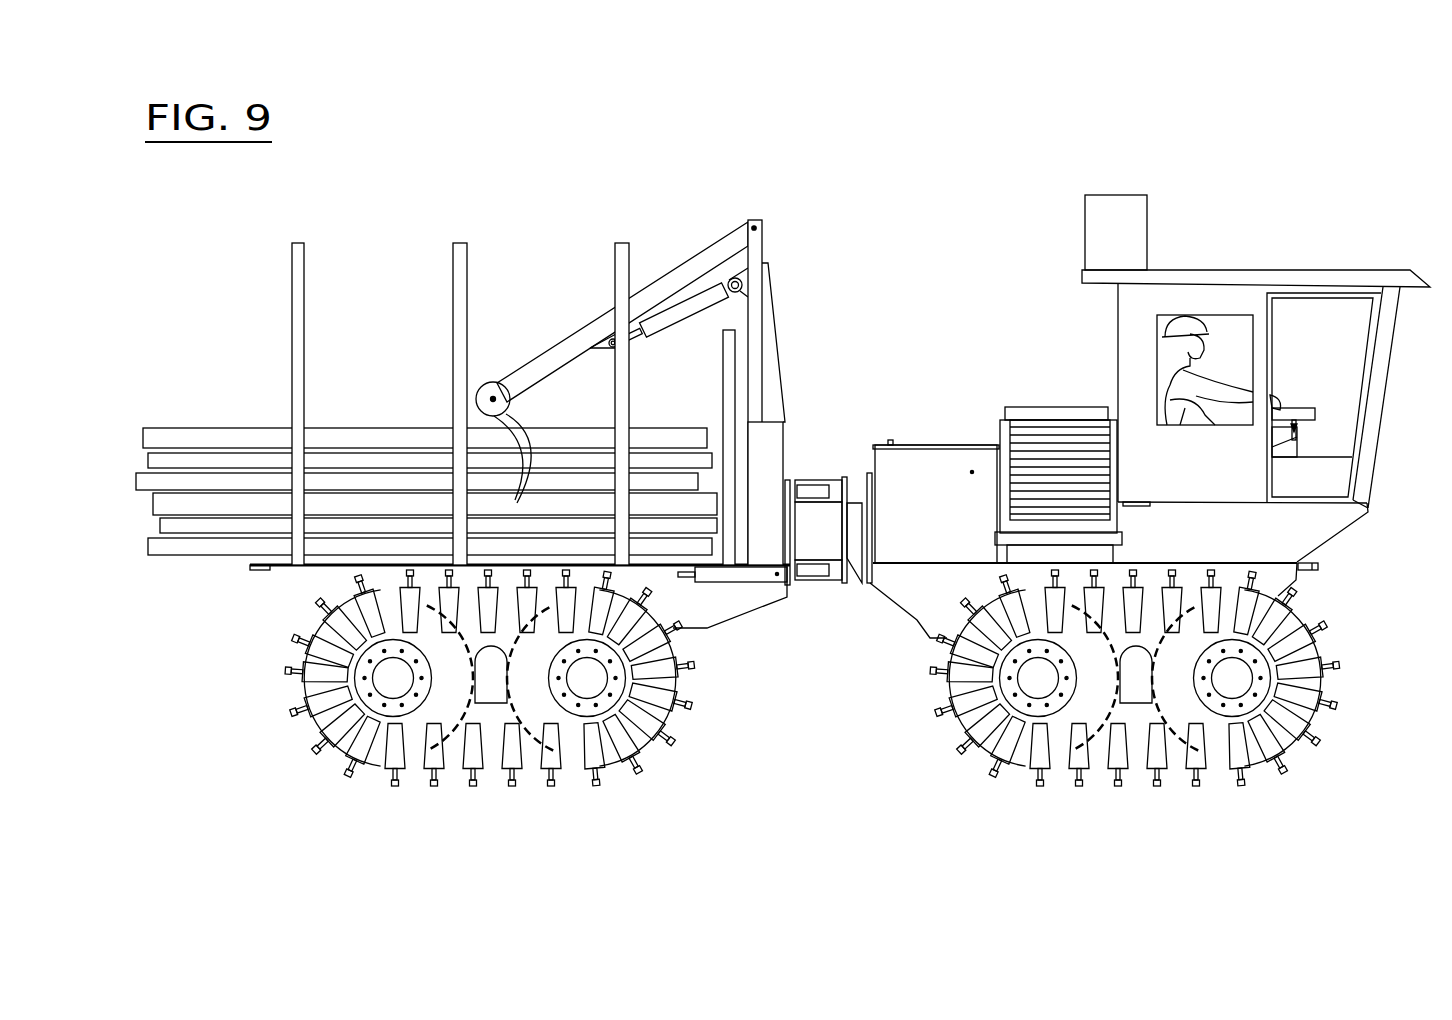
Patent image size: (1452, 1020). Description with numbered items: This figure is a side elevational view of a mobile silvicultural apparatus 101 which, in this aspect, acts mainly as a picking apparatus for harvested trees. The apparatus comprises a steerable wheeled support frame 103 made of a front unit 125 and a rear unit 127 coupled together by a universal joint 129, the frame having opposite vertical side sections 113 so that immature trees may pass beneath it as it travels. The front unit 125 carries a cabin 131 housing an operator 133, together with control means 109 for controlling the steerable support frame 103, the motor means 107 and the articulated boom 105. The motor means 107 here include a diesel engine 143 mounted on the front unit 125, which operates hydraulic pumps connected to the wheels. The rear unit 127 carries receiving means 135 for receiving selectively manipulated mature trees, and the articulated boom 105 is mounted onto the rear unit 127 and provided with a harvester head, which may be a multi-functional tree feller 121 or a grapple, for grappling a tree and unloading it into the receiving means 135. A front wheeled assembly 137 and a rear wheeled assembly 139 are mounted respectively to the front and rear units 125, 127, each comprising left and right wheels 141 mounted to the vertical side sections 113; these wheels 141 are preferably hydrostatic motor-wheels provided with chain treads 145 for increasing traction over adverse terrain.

The mobile silvicultural apparatus 101 is at (1379, 195).
The steerable wheeled support frame 103 is at (300, 598).
The articulated boom 105 is at (690, 255).
The motor means 107 is at (940, 385).
The control means 109 is at (1301, 407).
The vertical side sections 113 is at (712, 613).
The multi-functional tree feller 121 is at (521, 408).
The front unit 125 is at (1256, 303).
The rear unit 127 is at (622, 260).
The universal joint 129 is at (820, 462).
The cabin 131 is at (1213, 290).
The operator 133 is at (1210, 413).
The receiving means 135 is at (350, 355).
The front wheeled assembly 137 is at (1080, 707).
The rear wheeled assembly 139 is at (452, 706).
The hydrostatic motor-wheels 141 is at (537, 715).
The diesel engine 143 is at (1035, 427).
The chain treads 145 is at (693, 680).